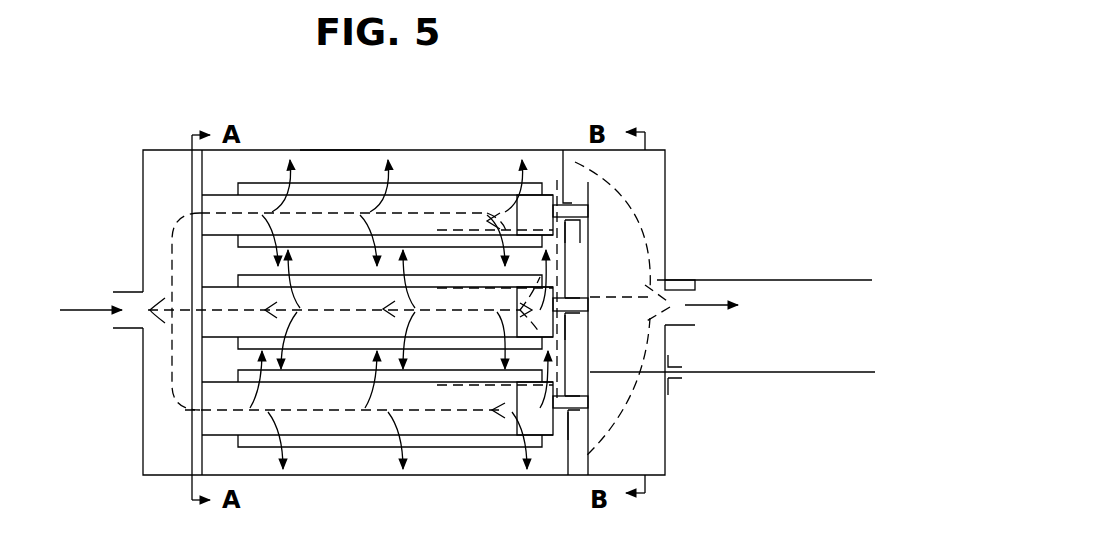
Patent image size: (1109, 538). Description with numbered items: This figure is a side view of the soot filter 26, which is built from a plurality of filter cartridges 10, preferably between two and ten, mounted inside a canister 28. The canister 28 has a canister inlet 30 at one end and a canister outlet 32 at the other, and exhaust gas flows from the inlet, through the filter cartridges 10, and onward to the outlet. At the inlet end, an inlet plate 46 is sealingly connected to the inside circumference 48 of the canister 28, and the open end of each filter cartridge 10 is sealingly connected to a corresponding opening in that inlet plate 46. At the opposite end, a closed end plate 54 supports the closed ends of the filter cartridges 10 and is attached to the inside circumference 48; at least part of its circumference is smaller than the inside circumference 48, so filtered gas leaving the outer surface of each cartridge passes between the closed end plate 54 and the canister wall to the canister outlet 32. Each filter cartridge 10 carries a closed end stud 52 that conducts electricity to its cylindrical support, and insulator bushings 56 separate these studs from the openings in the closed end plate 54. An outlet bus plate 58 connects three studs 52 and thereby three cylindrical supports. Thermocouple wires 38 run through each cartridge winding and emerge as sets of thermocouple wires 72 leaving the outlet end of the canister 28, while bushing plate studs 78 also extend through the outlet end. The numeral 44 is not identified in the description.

The filter cartridge 10 is at (373, 183).
The soot filter 26 is at (268, 174).
The canister 28 is at (338, 151).
The canister inlet 30 is at (115, 291).
The canister outlet 32 is at (687, 282).
The thermocouple wire 38 is at (527, 229).
The end plate 44 is at (202, 425).
The inlet plate 46 is at (205, 450).
The inside circumference 48 is at (168, 157).
The closed end stud 52 is at (580, 203).
The closed end plate 54 is at (567, 463).
The insulator bushing 56 is at (568, 224).
The outlet bus plate 58 is at (590, 344).
The thermocouple wires 72 is at (807, 278).
The bushing plate stud 78 is at (827, 370).